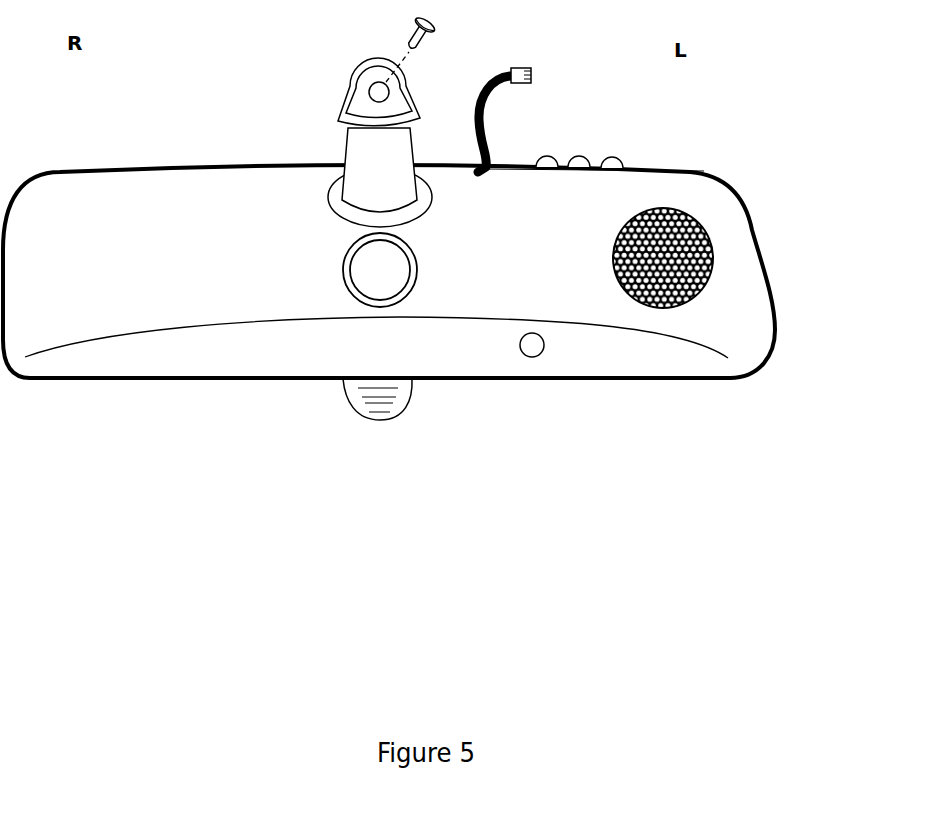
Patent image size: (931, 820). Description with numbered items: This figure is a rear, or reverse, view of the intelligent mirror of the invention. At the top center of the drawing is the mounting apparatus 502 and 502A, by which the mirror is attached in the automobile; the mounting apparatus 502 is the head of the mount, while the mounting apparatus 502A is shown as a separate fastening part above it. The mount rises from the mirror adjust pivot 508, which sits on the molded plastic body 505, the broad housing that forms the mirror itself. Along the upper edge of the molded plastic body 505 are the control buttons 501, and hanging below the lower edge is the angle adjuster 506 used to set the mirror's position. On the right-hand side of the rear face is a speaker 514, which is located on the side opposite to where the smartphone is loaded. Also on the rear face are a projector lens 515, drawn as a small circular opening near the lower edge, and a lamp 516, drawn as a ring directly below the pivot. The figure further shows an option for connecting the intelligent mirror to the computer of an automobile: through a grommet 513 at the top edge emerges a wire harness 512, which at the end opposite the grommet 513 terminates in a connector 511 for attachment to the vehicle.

The control buttons 501 is at (578, 153).
The mounting apparatus 502 is at (347, 77).
The mounting apparatus 502A is at (441, 27).
The molded plastic body 505 is at (775, 296).
The angle adjuster 506 is at (414, 409).
The mirror adjust pivot 508 is at (329, 179).
The connector 511 is at (536, 73).
The wire harness 512 is at (493, 110).
The grommet 513 is at (489, 173).
The speaker 514 is at (719, 247).
The projector lens 515 is at (532, 360).
The lamp 516 is at (341, 270).